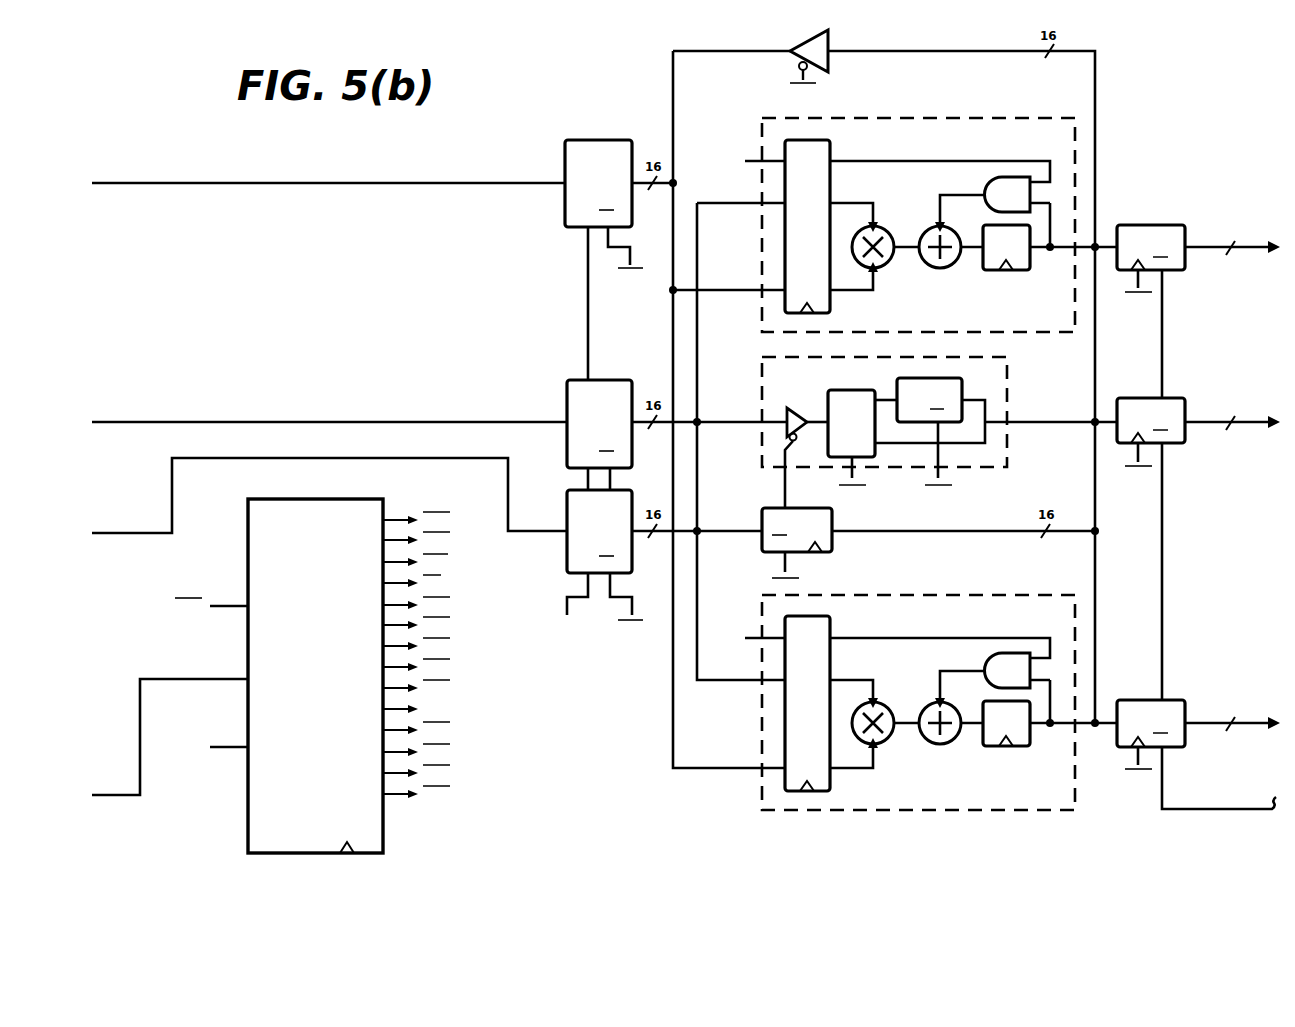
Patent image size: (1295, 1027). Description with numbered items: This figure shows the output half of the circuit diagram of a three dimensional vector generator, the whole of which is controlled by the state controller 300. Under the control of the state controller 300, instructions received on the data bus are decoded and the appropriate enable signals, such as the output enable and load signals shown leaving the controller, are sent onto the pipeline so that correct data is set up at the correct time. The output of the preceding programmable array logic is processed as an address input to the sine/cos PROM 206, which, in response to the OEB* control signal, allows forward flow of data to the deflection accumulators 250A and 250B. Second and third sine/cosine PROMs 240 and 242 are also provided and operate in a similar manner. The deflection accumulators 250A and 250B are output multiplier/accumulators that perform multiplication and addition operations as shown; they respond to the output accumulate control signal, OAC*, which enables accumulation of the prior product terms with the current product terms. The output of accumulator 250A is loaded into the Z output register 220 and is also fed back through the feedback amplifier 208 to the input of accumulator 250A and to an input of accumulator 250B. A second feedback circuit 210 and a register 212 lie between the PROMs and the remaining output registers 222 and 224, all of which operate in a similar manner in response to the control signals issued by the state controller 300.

The sine/cos PROM 206 is at (587, 140).
The first feedback circuit 208 is at (828, 32).
The second feedback circuit 210 is at (1007, 386).
The register 212 is at (832, 550).
The Z output register 220 is at (1148, 225).
The output register 222 is at (1170, 398).
The output register 224 is at (1168, 700).
The second sine/cosine PROM 240 is at (570, 380).
The third sine/cosine PROM 242 is at (567, 505).
The deflection accumulator 250A is at (935, 118).
The deflection accumulator 250B is at (932, 595).
The state controller 300 is at (355, 499).